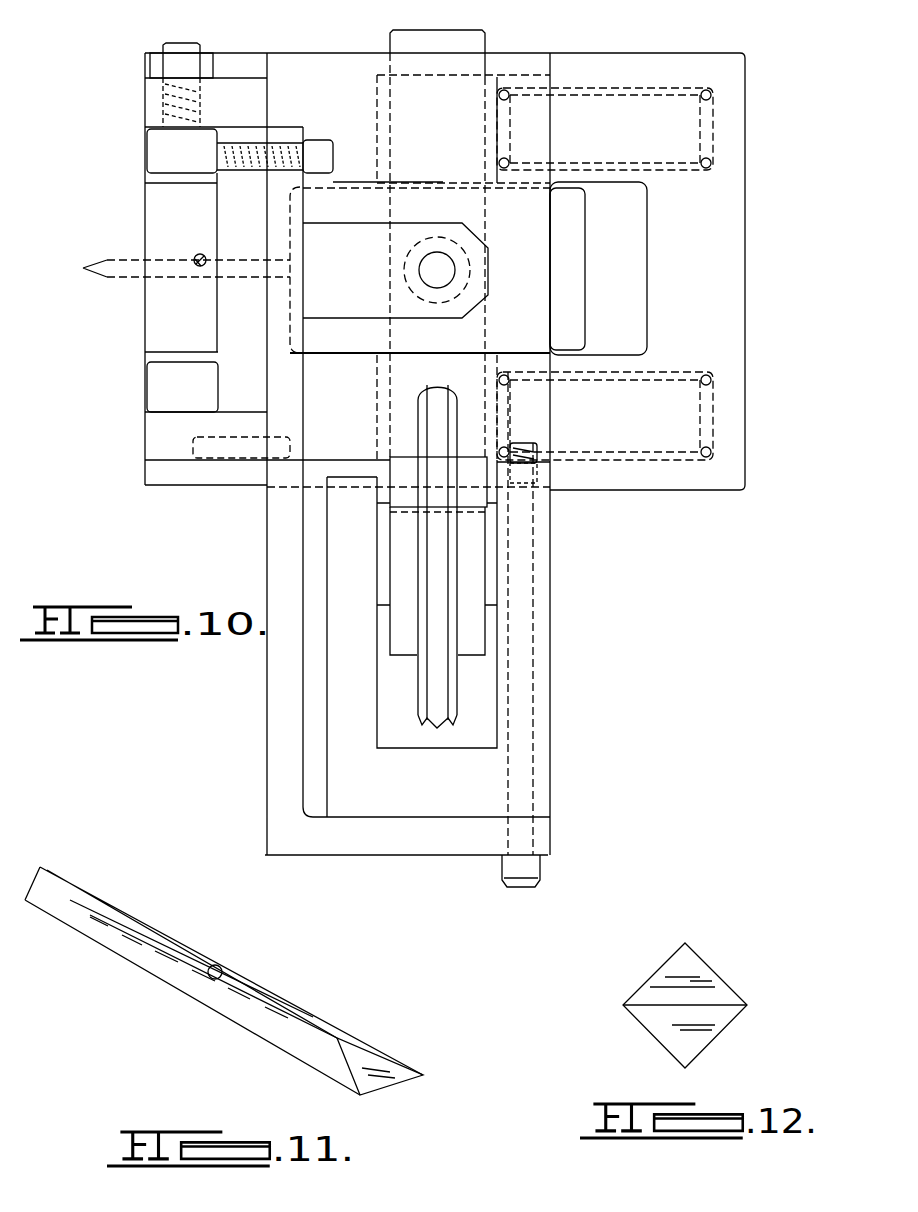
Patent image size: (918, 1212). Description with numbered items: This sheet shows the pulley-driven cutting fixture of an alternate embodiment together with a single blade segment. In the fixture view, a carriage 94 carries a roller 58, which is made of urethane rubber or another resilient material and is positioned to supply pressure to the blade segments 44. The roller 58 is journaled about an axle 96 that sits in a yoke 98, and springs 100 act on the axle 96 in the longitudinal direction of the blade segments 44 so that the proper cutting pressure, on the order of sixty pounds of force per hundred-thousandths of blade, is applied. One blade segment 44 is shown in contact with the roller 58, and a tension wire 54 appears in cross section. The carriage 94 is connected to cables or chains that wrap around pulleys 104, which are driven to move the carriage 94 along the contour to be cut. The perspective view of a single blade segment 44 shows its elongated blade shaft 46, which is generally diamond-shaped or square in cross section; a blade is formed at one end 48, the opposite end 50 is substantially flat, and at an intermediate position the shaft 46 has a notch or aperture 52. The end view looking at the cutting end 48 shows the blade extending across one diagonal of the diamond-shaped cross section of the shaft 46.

In FIG. 10, the blade segment 44 is at (120, 258).
In FIG. 11, the blade segment 44 is at (198, 912).
In FIG. 12, the blade segment 44 is at (707, 957).
In FIG. 11, the blade shaft 46 is at (290, 1003).
In FIG. 11, the cutting end 48 is at (400, 1086).
In FIG. 12, the cutting end 48 is at (660, 1008).
In FIG. 11, the opposite end 50 is at (50, 868).
In FIG. 11, the notch or aperture 52 is at (222, 966).
In FIG. 10, the tension wire 54 is at (206, 254).
In FIG. 10, the roller 58 is at (575, 257).
In FIG. 10, the carriage 94 is at (650, 475).
In FIG. 10, the axle 96 is at (392, 40).
In FIG. 10, the yoke 98 is at (377, 100).
In FIG. 10, the springs 100 is at (632, 98).
In FIG. 10, the pulleys 104 is at (457, 700).